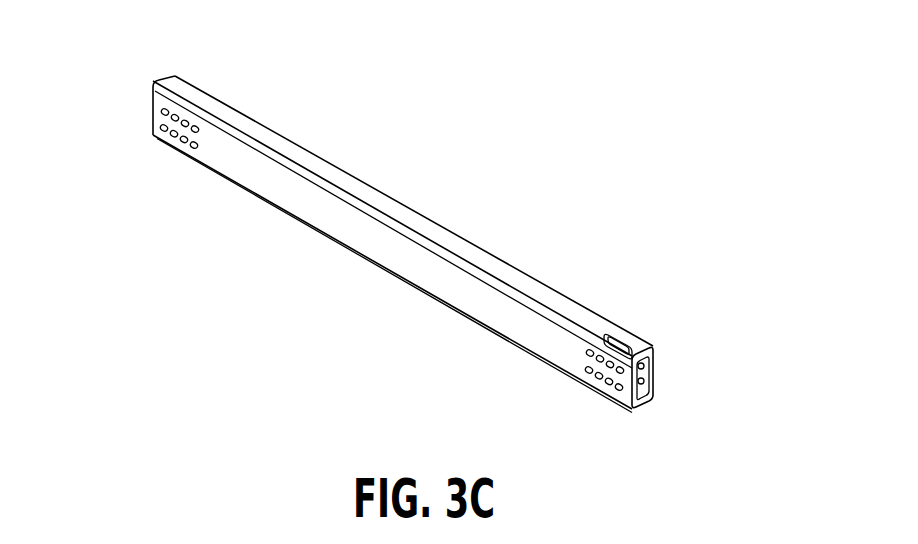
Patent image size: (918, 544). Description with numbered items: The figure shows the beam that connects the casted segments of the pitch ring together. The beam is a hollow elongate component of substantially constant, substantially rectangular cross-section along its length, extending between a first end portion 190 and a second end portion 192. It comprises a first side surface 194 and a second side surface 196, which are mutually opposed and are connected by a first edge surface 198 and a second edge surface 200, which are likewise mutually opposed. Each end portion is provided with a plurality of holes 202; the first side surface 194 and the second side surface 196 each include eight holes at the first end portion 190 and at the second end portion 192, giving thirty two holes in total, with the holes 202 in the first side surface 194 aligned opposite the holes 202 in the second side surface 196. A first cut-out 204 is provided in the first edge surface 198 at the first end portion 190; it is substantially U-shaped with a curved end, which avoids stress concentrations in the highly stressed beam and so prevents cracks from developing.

The first end portion 190 is at (655, 372).
The second end portion 192 is at (153, 105).
The first side surface 194 is at (328, 215).
The second side surface 196 is at (498, 261).
The first edge surface 198 is at (370, 200).
The second edge surface 200 is at (438, 297).
The holes 202 is at (175, 133).
The first cut-out 204 is at (638, 342).